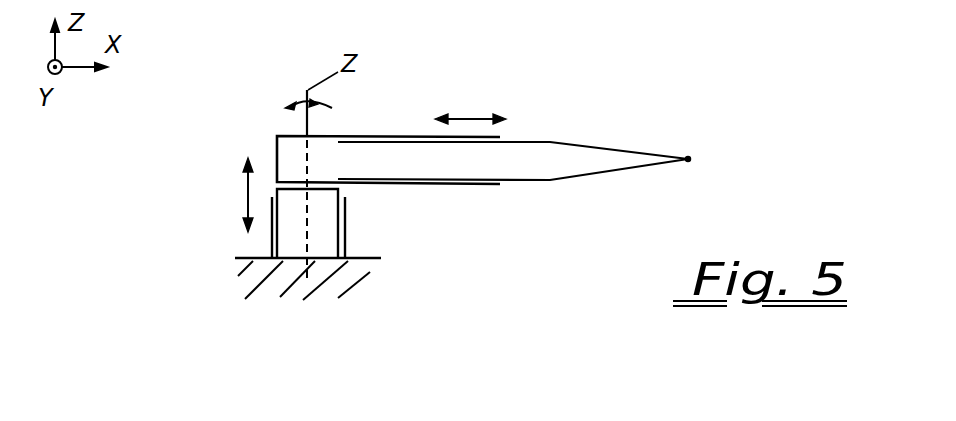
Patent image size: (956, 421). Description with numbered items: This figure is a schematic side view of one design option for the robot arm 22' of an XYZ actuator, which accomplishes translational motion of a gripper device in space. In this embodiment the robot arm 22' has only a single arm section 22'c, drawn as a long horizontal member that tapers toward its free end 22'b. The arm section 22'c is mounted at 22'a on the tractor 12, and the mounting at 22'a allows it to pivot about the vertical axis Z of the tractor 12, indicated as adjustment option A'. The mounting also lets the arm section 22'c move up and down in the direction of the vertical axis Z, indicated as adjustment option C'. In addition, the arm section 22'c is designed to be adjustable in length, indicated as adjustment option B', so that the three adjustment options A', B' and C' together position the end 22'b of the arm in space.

The tractor 12 is at (270, 288).
The robot arm 22' is at (513, 95).
The mounting 22'a is at (252, 237).
The arm tip 22'b is at (730, 177).
The arm section 22'c is at (513, 197).
The adjustment option A A' is at (263, 91).
The adjustment option B' is at (482, 80).
The adjustment option C' is at (208, 195).